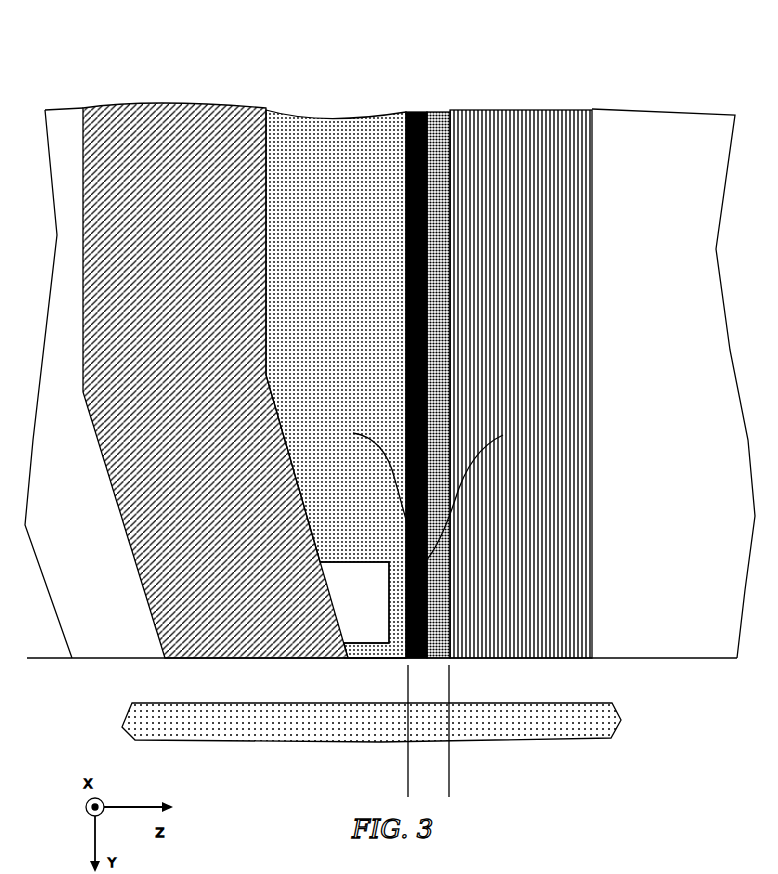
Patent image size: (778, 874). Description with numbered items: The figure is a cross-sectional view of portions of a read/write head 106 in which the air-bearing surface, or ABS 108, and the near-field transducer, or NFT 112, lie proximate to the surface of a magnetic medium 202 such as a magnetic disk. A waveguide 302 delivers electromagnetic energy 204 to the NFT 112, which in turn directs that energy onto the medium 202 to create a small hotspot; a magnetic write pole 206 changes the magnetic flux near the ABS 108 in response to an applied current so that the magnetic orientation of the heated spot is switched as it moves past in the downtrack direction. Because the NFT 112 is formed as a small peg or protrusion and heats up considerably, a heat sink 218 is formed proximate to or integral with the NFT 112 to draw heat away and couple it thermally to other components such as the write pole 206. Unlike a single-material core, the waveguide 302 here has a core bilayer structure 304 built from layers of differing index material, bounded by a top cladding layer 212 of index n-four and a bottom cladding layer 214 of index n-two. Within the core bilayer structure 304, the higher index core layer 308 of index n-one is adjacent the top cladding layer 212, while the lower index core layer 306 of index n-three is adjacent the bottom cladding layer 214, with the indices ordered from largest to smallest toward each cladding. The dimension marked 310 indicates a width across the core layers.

The read/write head 106 is at (656, 52).
The ABS 108 is at (44, 660).
The NFT 112 is at (388, 660).
The magnetic medium 202 is at (178, 723).
The electromagnetic energy 204 is at (485, 471).
The magnetic write pole 206 is at (192, 107).
The top cladding layer 212 is at (350, 117).
The bottom cladding layer 214 is at (521, 374).
The heat sink 218 is at (345, 661).
The waveguide 302 is at (429, 337).
The core bilayer structure 304 is at (424, 355).
The lower index core layer 306 is at (463, 372).
The higher index core layer 308 is at (407, 115).
The layer thickness 310 is at (443, 774).